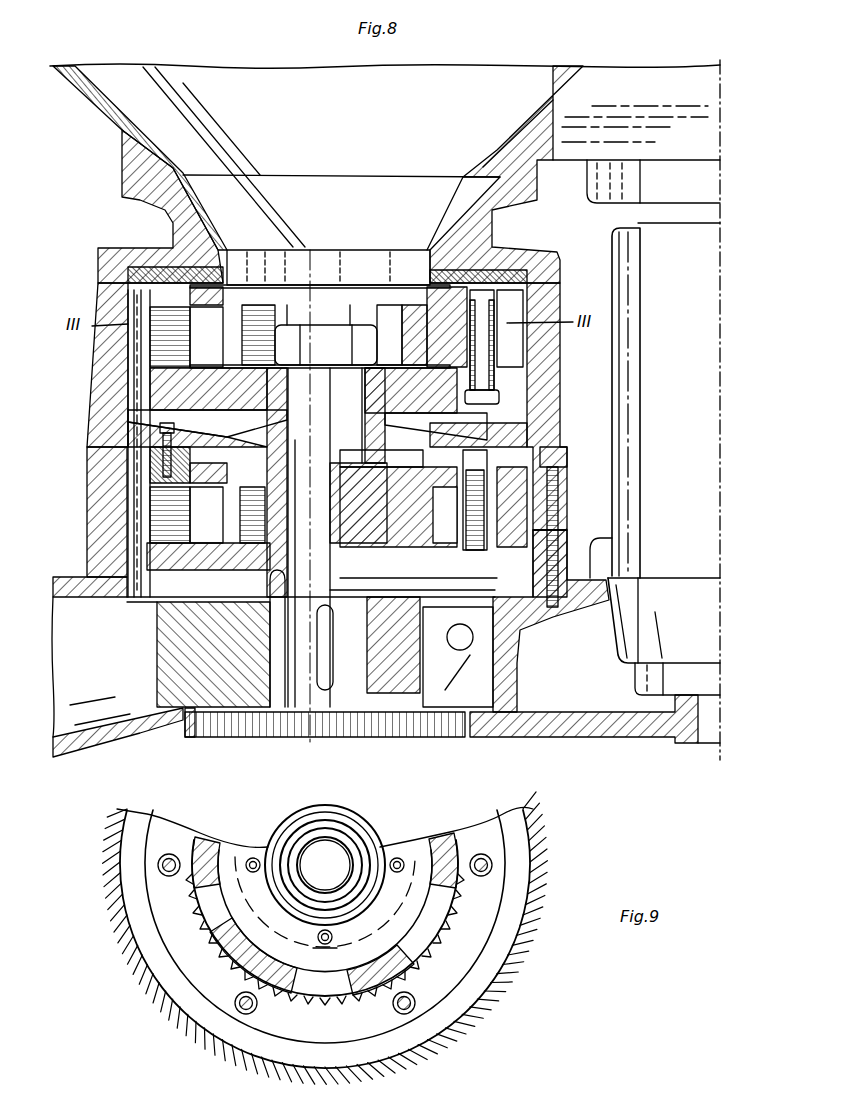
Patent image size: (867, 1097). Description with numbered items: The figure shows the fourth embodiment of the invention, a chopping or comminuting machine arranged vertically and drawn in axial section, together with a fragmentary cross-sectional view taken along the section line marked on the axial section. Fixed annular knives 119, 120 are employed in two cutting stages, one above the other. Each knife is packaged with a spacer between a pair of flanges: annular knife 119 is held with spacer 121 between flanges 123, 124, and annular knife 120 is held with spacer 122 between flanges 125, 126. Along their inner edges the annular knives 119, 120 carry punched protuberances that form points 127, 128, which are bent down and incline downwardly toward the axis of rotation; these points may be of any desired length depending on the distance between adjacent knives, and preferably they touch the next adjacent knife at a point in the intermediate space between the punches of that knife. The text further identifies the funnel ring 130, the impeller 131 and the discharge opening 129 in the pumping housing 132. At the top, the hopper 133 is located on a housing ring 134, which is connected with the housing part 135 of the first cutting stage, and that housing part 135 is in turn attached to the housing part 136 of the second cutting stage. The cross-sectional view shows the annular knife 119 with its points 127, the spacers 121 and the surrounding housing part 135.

In FIG. 8, the annular knife 119 is at (497, 338).
In FIG. 9, the annular knife 119 is at (168, 940).
In FIG. 8, the annular knife 120 is at (497, 500).
In FIG. 8, the spacer 121 is at (477, 350).
In FIG. 9, the spacer 121 is at (162, 866).
In FIG. 8, the spacer 122 is at (497, 521).
In FIG. 8, the flange 123 is at (555, 254).
In FIG. 8, the flange 124 is at (499, 384).
In FIG. 8, the flange 125 is at (555, 464).
In FIG. 8, the flange 126 is at (500, 557).
In FIG. 8, the points 127 is at (150, 336).
In FIG. 9, the points 127 is at (453, 908).
In FIG. 8, the points 128 is at (150, 516).
In FIG. 8, the discharge opening 129 is at (128, 417).
In FIG. 8, the funnel ring 130 is at (412, 680).
In FIG. 8, the impeller 131 is at (117, 712).
In FIG. 8, the pumping housing 132 is at (513, 681).
In FIG. 8, the hopper 133 is at (122, 127).
In FIG. 8, the housing ring 134 is at (173, 217).
In FIG. 8, the housing part 135 is at (128, 312).
In FIG. 9, the housing part 135 is at (160, 990).
In FIG. 8, the housing part 136 is at (92, 486).